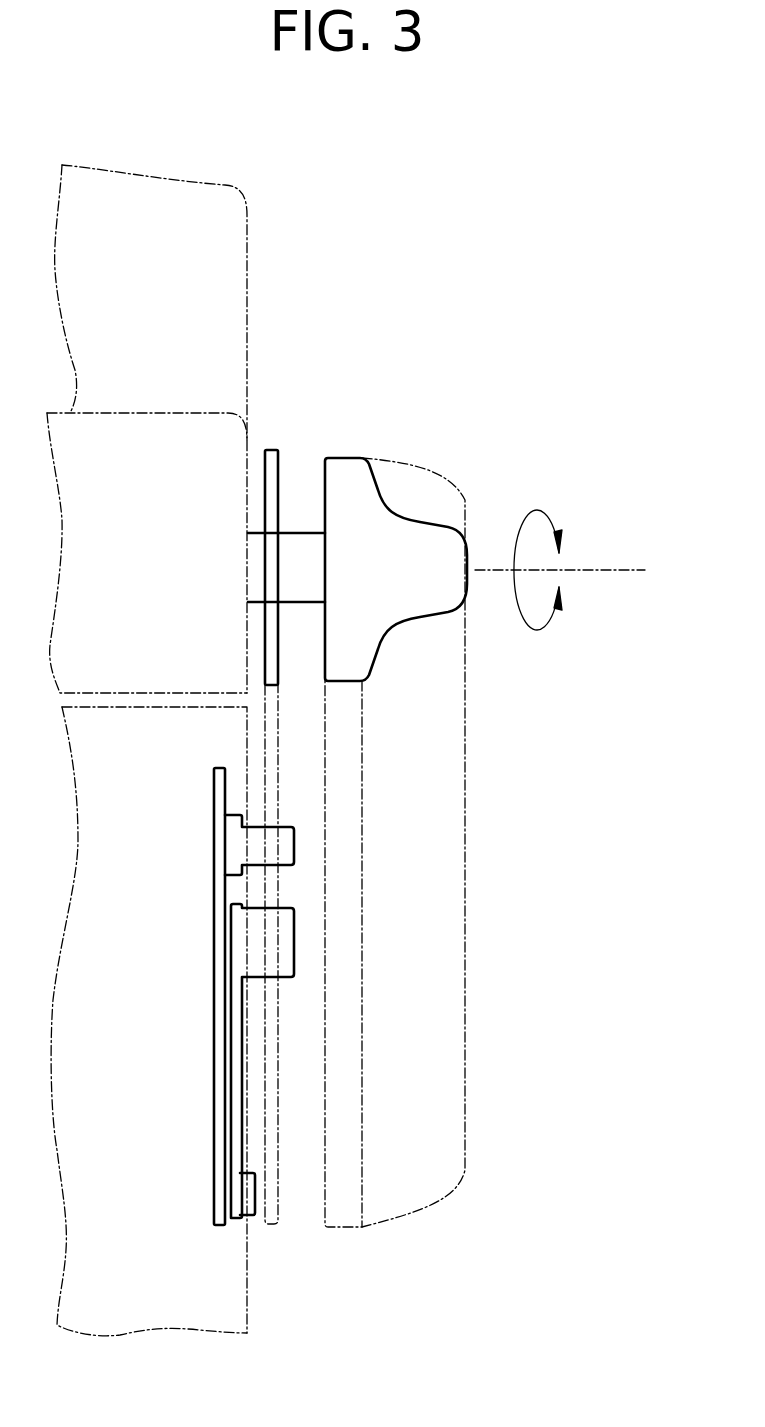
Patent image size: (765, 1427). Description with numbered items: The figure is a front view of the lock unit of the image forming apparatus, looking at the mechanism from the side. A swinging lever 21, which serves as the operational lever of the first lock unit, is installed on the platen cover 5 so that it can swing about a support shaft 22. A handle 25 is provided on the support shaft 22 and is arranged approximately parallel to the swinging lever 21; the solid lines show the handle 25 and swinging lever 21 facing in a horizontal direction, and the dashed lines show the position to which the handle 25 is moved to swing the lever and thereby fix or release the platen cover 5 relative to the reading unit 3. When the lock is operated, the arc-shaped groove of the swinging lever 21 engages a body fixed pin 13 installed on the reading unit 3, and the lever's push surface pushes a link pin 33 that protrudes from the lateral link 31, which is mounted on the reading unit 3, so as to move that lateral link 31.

The reading unit 3 is at (141, 959).
The platen cover 5 is at (161, 313).
The body fixed pin 13 is at (287, 841).
The swinging lever 21 is at (273, 452).
The support shaft 22 is at (305, 532).
The handle 25 is at (412, 533).
The lateral link 31 is at (237, 1057).
The link pin 33 is at (287, 927).